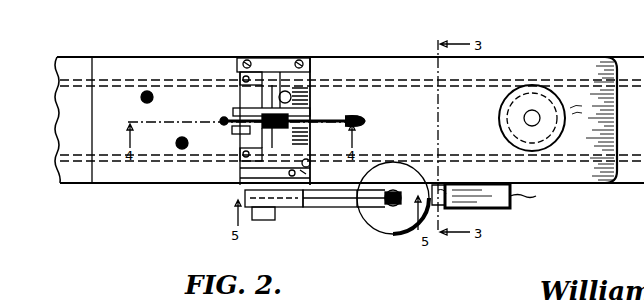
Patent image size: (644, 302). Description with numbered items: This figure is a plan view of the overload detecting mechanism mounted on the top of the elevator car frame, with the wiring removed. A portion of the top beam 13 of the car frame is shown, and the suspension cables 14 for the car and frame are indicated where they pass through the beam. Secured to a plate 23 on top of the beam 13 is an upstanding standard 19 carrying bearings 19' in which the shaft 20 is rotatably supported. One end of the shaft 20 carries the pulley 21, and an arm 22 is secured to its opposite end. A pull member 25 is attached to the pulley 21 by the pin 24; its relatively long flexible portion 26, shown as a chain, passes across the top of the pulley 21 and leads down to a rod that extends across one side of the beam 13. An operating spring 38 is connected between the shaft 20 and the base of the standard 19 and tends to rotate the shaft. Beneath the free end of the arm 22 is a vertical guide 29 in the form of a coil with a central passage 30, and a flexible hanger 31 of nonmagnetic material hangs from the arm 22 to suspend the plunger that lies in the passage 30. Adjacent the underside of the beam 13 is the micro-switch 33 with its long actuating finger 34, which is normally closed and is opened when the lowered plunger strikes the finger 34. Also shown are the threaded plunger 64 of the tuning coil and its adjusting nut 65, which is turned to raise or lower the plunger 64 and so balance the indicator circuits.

The top beam 13 is at (80, 62).
The suspension cables 14 is at (181, 137).
The upstanding standard 19 is at (273, 107).
The bearings 19' is at (264, 107).
The shaft 20 is at (266, 220).
The pulley 21 is at (234, 108).
The arm 22 is at (300, 207).
The plate 23 is at (166, 178).
The pin 24 is at (275, 132).
The pull member 25 is at (220, 122).
The flexible portion 26 is at (238, 132).
The vertical guide 29 is at (406, 172).
The central passage 30 is at (392, 190).
The flexible hanger 31 is at (347, 206).
The switch 33 is at (505, 208).
The switch blade actuating finger 34 is at (446, 185).
The operating spring 38 is at (315, 118).
The plunger 64 is at (524, 118).
The adjusting nut 65 is at (551, 96).